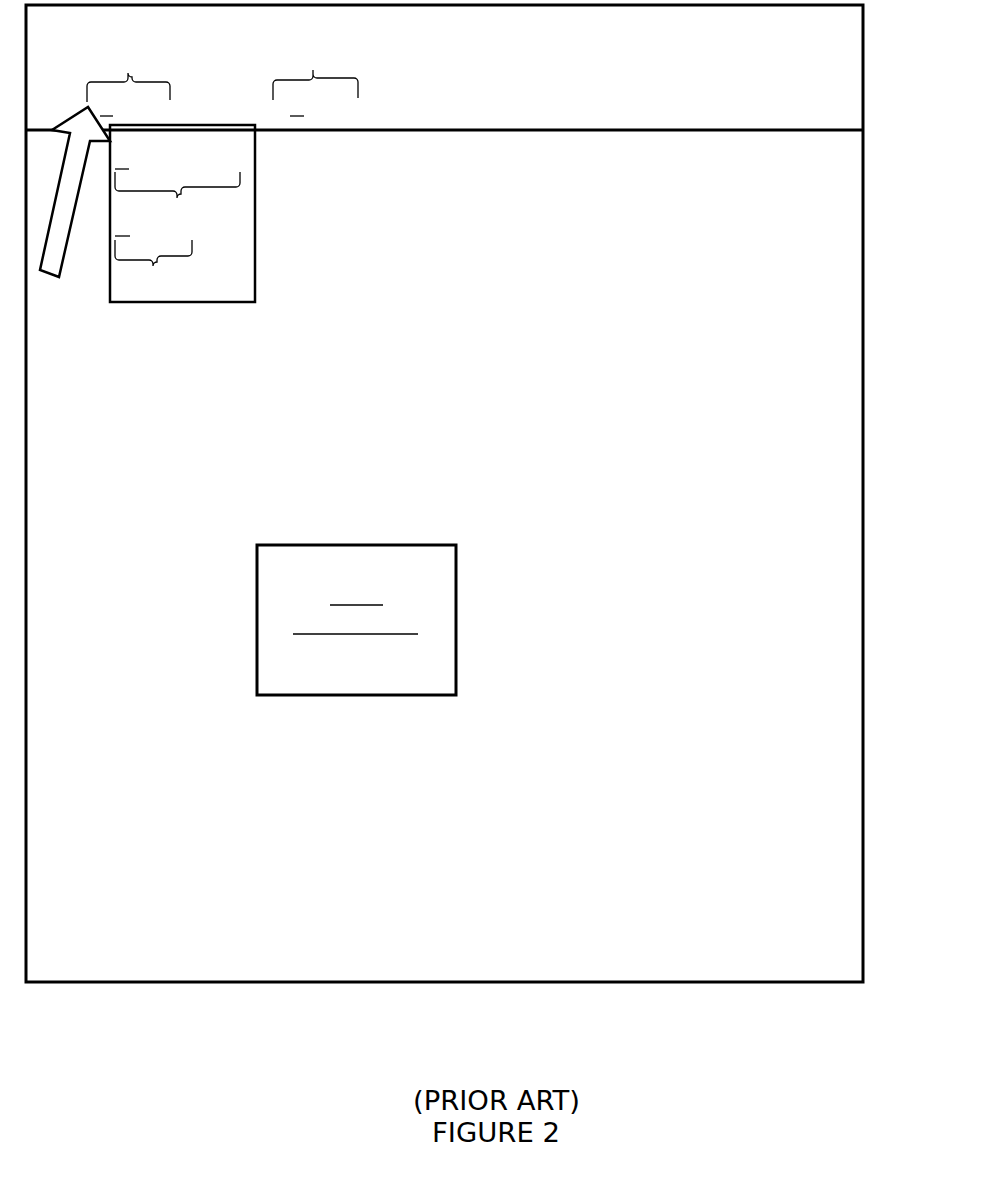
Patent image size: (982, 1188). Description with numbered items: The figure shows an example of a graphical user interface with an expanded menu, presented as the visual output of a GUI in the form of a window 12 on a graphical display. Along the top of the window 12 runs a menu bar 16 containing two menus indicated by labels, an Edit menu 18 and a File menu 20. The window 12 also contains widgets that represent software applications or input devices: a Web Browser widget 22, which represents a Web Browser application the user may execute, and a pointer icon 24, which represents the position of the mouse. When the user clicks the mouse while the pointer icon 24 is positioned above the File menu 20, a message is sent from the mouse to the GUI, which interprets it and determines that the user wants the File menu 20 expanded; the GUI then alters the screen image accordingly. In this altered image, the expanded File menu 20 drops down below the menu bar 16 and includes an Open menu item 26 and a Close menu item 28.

The window 12 is at (448, 984).
The menu bar 16 is at (720, 132).
The Edit menu 18 is at (316, 72).
The File menu 20 is at (130, 72).
The Web Browser widget 22 is at (370, 664).
The pointer icon 24 is at (59, 277).
The Open menu item 26 is at (182, 200).
The Close menu item 28 is at (160, 265).